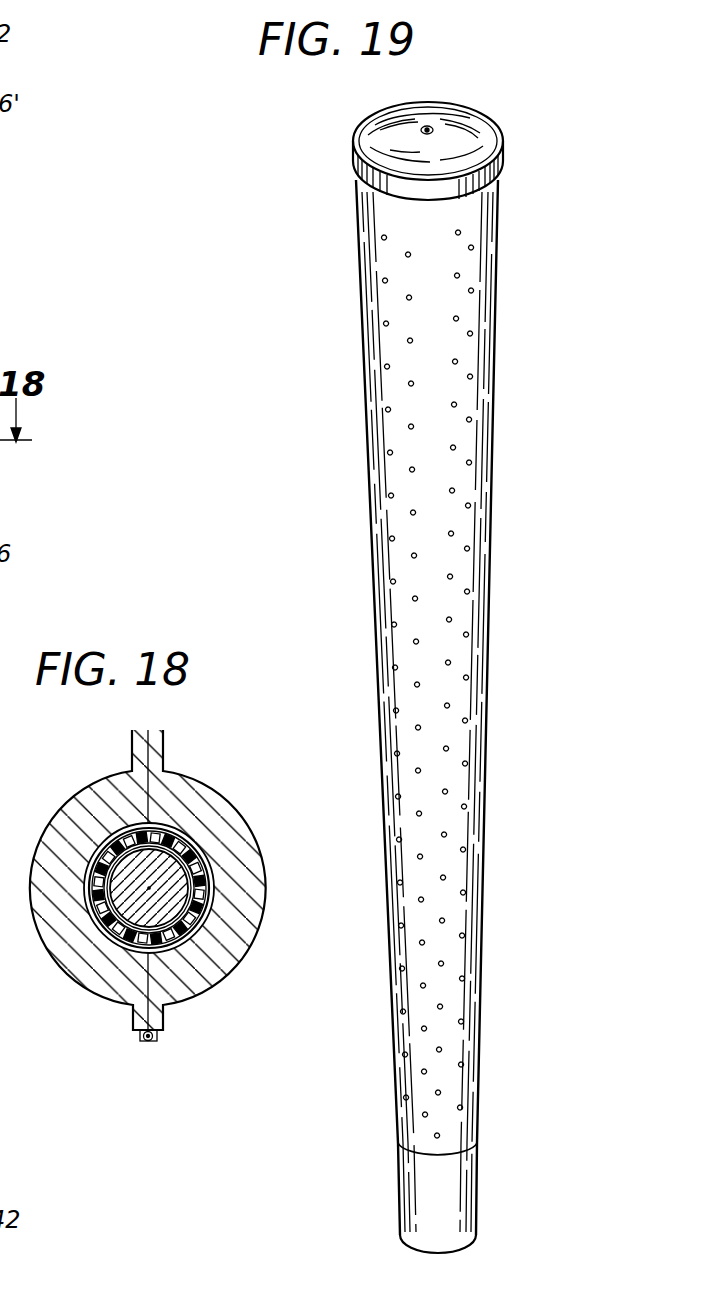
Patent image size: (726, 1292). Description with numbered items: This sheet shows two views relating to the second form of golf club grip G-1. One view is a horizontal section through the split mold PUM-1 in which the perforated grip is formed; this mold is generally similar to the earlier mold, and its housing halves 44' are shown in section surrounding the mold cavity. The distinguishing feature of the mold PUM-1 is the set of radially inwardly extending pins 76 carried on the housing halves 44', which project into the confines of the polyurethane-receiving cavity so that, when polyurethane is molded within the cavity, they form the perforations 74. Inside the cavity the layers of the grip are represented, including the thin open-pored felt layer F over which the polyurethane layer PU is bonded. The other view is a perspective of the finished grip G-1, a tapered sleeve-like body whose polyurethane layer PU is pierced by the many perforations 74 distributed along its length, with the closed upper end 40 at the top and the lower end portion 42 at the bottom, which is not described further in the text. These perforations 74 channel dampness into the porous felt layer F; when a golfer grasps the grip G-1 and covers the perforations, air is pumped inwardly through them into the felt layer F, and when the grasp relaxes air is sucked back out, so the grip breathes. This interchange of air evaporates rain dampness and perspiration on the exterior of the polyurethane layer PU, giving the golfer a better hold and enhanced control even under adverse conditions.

In FIG. 19, the end cap of grip 40 is at (478, 126).
In FIG. 19, the golf club grip G-1 is at (358, 325).
In FIG. 19, the perforations 74 is at (405, 405).
In FIG. 19, the lower end portion of grip 42 is at (405, 1178).
In FIG. 18, the housing halves 44' is at (148, 885).
In FIG. 18, the pins 76 is at (180, 833).
In FIG. 18, the felt layer F is at (200, 862).
In FIG. 18, the polyurethane layer PU is at (210, 893).
In FIG. 18, the split mold PUM-1 is at (213, 975).